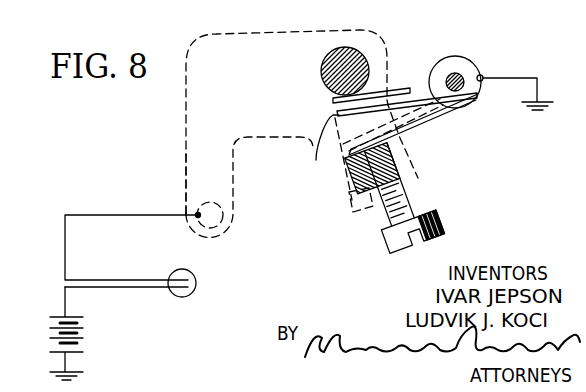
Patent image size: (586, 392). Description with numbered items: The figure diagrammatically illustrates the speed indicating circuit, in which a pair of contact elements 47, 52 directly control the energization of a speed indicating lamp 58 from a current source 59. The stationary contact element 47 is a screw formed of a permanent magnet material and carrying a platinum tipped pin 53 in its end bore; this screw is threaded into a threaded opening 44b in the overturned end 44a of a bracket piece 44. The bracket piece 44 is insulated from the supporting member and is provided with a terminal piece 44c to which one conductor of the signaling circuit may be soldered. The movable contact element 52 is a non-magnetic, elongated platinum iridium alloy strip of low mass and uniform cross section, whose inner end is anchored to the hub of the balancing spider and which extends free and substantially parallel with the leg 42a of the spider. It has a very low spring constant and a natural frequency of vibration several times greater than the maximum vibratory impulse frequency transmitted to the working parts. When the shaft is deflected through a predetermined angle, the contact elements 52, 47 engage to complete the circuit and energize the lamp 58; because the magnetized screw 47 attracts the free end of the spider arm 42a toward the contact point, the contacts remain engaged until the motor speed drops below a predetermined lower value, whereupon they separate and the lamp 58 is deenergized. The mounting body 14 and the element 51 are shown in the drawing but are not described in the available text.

The housing body 14 is at (427, 141).
The leg of the spider 42a is at (333, 108).
The bracket piece 44 is at (282, 137).
The overturned end of the bracket piece 44a is at (363, 206).
The threaded opening 44b is at (358, 197).
The terminal piece 44c is at (189, 189).
The stationary contact element 47 is at (416, 193).
The roller 51 is at (321, 68).
The movable contact element 52 is at (315, 149).
The platinum tipped pin 53 is at (370, 148).
The speed indicating lamp 58 is at (197, 282).
The current source 59 is at (82, 338).